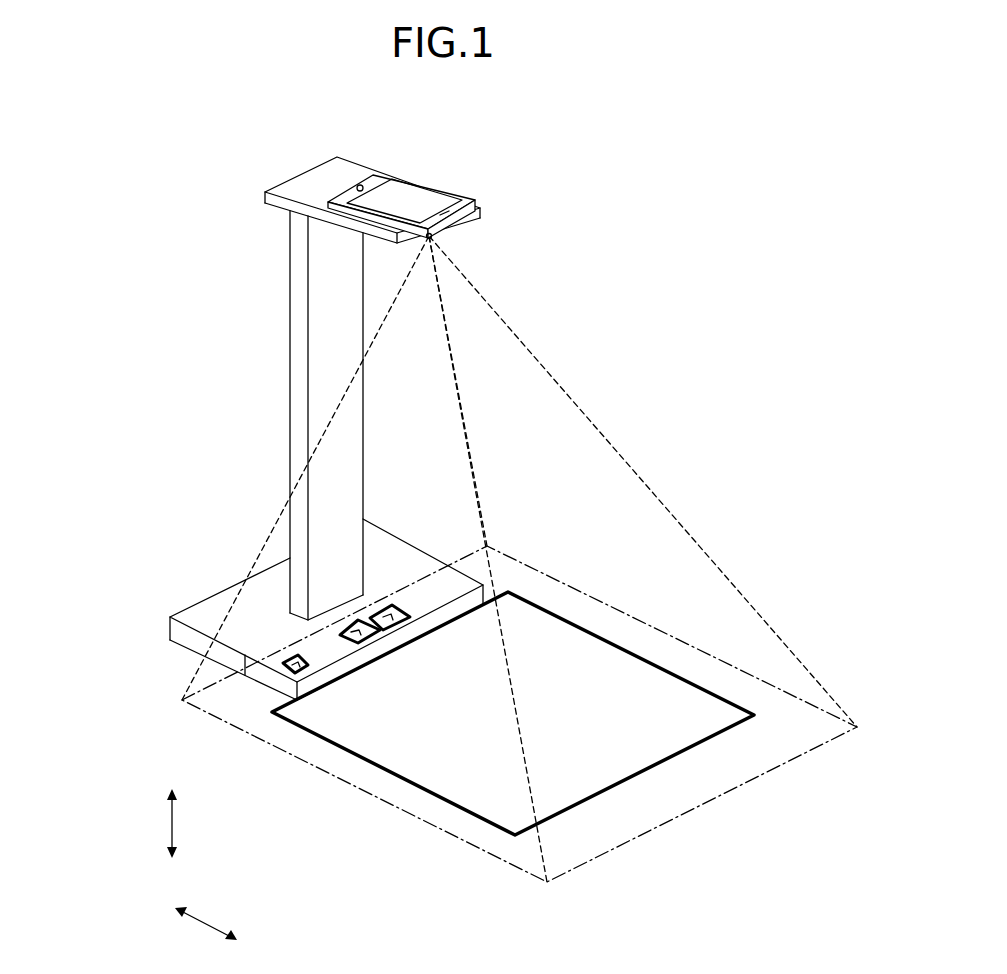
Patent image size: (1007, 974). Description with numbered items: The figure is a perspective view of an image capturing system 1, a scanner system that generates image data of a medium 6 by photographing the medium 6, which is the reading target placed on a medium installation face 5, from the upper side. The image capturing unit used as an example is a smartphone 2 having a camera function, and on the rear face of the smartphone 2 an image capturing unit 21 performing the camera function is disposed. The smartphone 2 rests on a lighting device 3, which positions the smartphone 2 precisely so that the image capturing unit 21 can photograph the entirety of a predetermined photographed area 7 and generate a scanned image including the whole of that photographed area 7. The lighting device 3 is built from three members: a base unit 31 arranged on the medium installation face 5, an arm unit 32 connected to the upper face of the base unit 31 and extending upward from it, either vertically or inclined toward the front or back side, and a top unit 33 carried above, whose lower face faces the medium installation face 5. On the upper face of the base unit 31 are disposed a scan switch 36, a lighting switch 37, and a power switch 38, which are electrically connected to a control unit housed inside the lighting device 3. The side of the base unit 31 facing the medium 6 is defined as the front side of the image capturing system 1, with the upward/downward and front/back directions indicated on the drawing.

The image capturing system 1 is at (652, 134).
The smartphone 2 is at (480, 197).
The image capturing unit 21 is at (448, 237).
The lighting device 3 is at (258, 173).
The base unit 31 is at (200, 612).
The arm unit 32 is at (298, 292).
The top unit 33 is at (322, 172).
The scan switch 36 is at (365, 640).
The lighting switch 37 is at (396, 619).
The power switch 38 is at (283, 672).
The medium installation face 5 is at (758, 811).
The medium 6 is at (573, 782).
The photographed area 7 is at (442, 834).